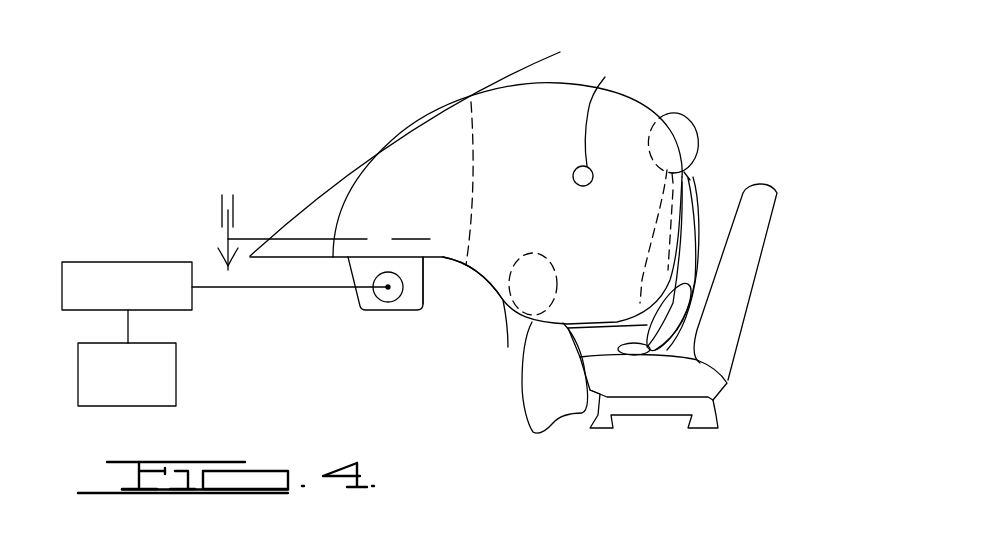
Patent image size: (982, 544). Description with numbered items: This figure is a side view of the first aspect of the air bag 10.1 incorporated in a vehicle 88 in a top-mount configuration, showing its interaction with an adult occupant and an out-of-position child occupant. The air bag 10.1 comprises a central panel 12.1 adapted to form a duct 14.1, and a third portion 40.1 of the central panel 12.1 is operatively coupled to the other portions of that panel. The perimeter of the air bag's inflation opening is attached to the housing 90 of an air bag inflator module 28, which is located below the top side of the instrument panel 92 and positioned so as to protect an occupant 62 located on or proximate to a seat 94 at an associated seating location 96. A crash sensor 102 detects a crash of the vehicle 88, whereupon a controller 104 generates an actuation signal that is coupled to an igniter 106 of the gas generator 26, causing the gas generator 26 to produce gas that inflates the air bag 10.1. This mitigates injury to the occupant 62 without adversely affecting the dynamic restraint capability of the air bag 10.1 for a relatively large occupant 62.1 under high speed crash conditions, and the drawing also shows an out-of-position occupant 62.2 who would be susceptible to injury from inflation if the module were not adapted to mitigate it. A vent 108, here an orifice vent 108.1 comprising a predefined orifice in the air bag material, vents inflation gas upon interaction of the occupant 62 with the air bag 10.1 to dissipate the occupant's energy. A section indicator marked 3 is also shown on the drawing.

The air bag 10.1 is at (682, 80).
The central panel 12.1 is at (350, 155).
The third portion 40.1 is at (470, 137).
The duct 14.1 is at (400, 127).
The gas generator 26 is at (402, 298).
The air bag inflator module 28 is at (338, 317).
The occupant 62 is at (620, 282).
The relatively large occupant 62.1 is at (690, 113).
The out-of-position occupant 62.2 is at (538, 410).
The vehicle 88 is at (316, 234).
The housing 90 is at (425, 276).
The instrument panel 92 is at (507, 344).
The seat 94 is at (717, 383).
The seating location 96 is at (743, 168).
The crash sensor 102 is at (167, 375).
The controller 104 is at (79, 268).
The igniter 106 is at (386, 288).
The vent 108 is at (614, 120).
The orifice vent 108.1 is at (614, 120).
The section line indicator 3 is at (211, 232).